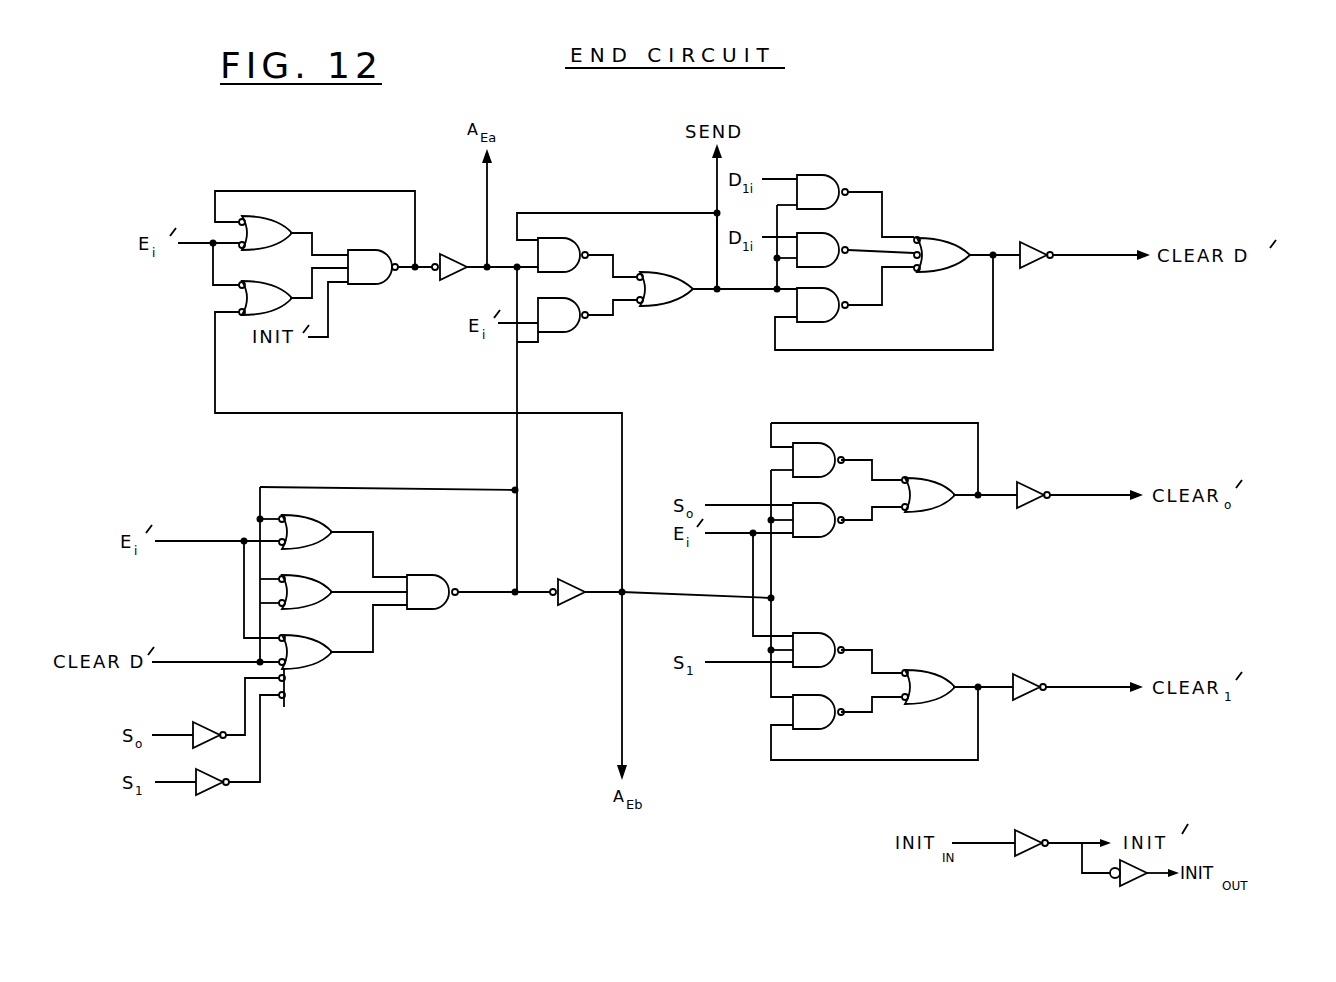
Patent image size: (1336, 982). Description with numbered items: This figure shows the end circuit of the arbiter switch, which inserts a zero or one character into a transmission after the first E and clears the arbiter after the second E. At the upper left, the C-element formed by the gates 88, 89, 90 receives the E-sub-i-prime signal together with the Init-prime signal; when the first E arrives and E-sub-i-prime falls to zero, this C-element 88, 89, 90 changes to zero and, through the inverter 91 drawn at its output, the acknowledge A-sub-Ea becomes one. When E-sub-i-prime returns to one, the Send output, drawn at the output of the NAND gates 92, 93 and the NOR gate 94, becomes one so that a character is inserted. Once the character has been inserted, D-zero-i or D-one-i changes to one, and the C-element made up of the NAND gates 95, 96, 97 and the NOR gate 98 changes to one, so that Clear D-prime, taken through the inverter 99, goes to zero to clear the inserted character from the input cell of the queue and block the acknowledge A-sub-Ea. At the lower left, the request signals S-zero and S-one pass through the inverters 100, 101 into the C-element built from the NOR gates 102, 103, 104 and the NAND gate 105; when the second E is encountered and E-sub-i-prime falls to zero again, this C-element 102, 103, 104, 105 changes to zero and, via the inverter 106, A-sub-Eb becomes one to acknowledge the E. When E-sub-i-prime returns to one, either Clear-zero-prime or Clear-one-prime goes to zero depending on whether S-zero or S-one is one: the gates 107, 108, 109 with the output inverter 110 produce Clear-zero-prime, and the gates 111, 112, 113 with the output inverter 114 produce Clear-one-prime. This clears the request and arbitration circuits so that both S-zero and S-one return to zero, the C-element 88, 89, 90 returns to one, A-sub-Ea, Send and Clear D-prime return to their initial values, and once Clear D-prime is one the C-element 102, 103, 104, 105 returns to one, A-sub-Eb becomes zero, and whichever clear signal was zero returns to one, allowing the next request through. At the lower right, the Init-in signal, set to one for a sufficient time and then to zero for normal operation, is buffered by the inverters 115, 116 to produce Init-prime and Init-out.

The C-element 88 is at (284, 230).
The C-element 89 is at (262, 284).
The C-element 90 is at (370, 286).
The inverter 91 is at (446, 254).
The NAND gate 92 is at (580, 241).
The NAND gate 93 is at (577, 333).
The NOR gate 94 is at (690, 304).
The C-element 95 is at (822, 176).
The C-element 96 is at (832, 234).
The C-element 97 is at (828, 289).
The C-element 98 is at (946, 273).
The inverter 99 is at (1038, 263).
The inverter 100 is at (218, 722).
The inverter 101 is at (210, 795).
The C-element 102 is at (322, 523).
The C-element 103 is at (314, 577).
The C-element 104 is at (320, 668).
The C-element 105 is at (437, 611).
The inverter 106 is at (570, 606).
The NAND gate 107 is at (846, 446).
The NAND gate 108 is at (836, 537).
The NOR gate 109 is at (942, 511).
The inverter 110 is at (1036, 508).
The NAND gate 111 is at (836, 729).
The NAND gate 112 is at (828, 633).
The NOR gate 113 is at (934, 671).
The inverter 114 is at (1026, 700).
The inverter 115 is at (1028, 856).
The inverter 116 is at (1138, 886).